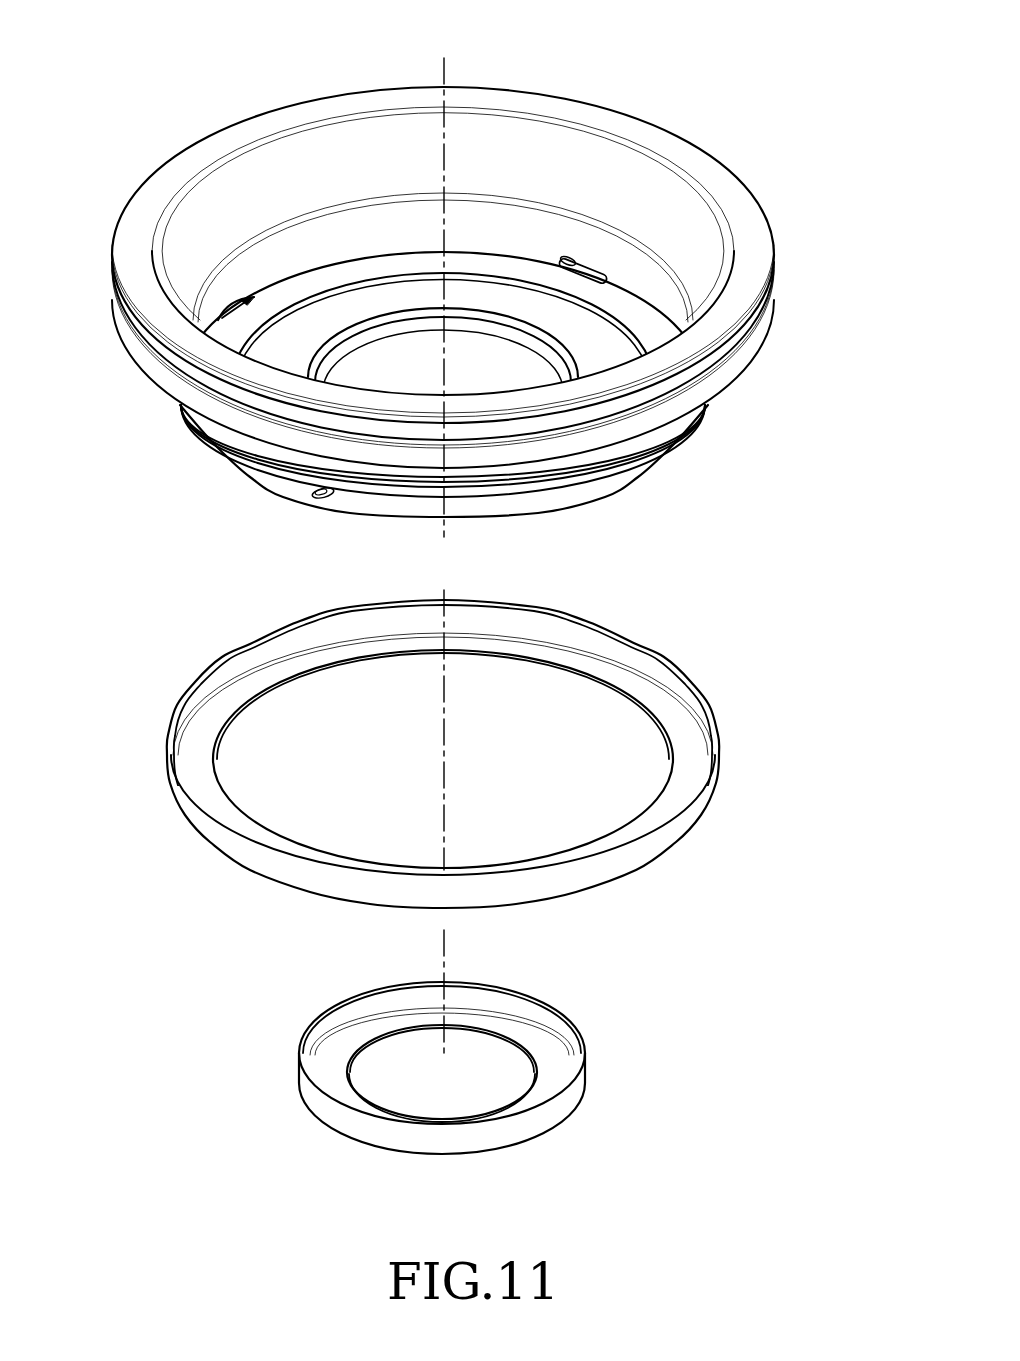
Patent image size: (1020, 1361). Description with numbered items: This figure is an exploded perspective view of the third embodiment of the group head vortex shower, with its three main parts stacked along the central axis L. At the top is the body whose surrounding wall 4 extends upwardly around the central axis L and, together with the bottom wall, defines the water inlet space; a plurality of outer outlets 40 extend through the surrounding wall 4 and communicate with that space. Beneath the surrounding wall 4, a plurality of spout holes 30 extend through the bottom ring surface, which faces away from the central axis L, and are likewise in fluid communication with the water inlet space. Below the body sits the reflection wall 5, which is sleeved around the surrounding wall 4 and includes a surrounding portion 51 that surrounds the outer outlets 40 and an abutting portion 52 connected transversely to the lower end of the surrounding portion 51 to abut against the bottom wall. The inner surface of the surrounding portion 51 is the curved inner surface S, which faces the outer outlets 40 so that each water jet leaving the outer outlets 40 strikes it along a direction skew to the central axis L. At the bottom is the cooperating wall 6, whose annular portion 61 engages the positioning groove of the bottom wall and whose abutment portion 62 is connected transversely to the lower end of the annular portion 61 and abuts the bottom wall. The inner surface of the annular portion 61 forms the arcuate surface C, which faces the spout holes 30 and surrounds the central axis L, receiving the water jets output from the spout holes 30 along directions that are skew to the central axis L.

The surrounding wall 4 is at (471, 288).
The outer outlets 40 is at (587, 262).
The spout holes 30 is at (593, 360).
The reflection wall 5 is at (503, 720).
The surrounding portion 51 is at (690, 823).
The abutting portion 52 is at (683, 752).
The cooperating wall 6 is at (462, 1041).
The annular portion 61 is at (315, 1095).
The abutment portion 62 is at (345, 1058).
The curved inner surface S is at (627, 652).
The arcuate surface C is at (588, 1026).
The central axis L is at (444, 534).